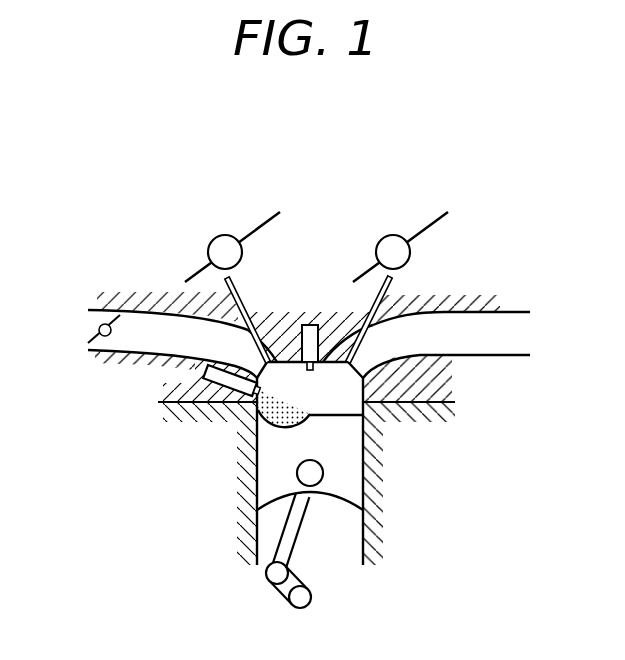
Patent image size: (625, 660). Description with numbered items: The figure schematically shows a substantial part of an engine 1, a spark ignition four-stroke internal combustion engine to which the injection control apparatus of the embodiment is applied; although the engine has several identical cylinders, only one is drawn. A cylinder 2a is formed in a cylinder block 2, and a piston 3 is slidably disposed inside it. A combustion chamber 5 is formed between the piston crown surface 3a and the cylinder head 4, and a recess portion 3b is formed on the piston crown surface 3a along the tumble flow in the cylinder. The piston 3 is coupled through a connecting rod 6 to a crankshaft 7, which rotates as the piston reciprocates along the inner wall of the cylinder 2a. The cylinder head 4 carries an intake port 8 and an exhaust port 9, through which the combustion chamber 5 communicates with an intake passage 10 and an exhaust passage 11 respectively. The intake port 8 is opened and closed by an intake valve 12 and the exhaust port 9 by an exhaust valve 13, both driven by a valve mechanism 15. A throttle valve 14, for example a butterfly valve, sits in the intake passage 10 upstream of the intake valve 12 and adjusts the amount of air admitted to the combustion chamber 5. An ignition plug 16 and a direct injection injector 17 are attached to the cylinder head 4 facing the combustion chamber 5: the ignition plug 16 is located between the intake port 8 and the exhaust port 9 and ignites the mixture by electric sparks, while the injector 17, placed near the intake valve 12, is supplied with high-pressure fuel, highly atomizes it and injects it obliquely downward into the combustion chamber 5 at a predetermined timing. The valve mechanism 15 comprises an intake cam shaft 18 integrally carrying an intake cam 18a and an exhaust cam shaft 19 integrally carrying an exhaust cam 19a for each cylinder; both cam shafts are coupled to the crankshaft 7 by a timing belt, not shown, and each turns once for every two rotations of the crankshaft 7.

The engine 1 is at (507, 178).
The cylinder block 2 is at (248, 511).
The cylinder 2a is at (358, 475).
The piston 3 is at (362, 502).
The piston crown surface 3a is at (327, 415).
The recess portion 3b is at (275, 440).
The cylinder head 4 is at (410, 382).
The combustion chamber 5 is at (365, 390).
The connecting rod 6 is at (297, 545).
The crankshaft 7 is at (290, 607).
The intake port 8 is at (283, 343).
The exhaust port 9 is at (340, 350).
The intake passage 10 is at (168, 330).
The exhaust passage 11 is at (447, 327).
The intake valve 12 is at (213, 361).
The exhaust valve 13 is at (418, 313).
The throttle valve 14 is at (90, 342).
The valve mechanism 15 is at (360, 188).
The ignition plug 16 is at (310, 323).
The direct injection injector 17 is at (218, 402).
The intake cam shaft 18 is at (190, 278).
The intake cam 18a is at (217, 240).
The exhaust cam shaft 19 is at (412, 238).
The exhaust cam 19a is at (392, 236).